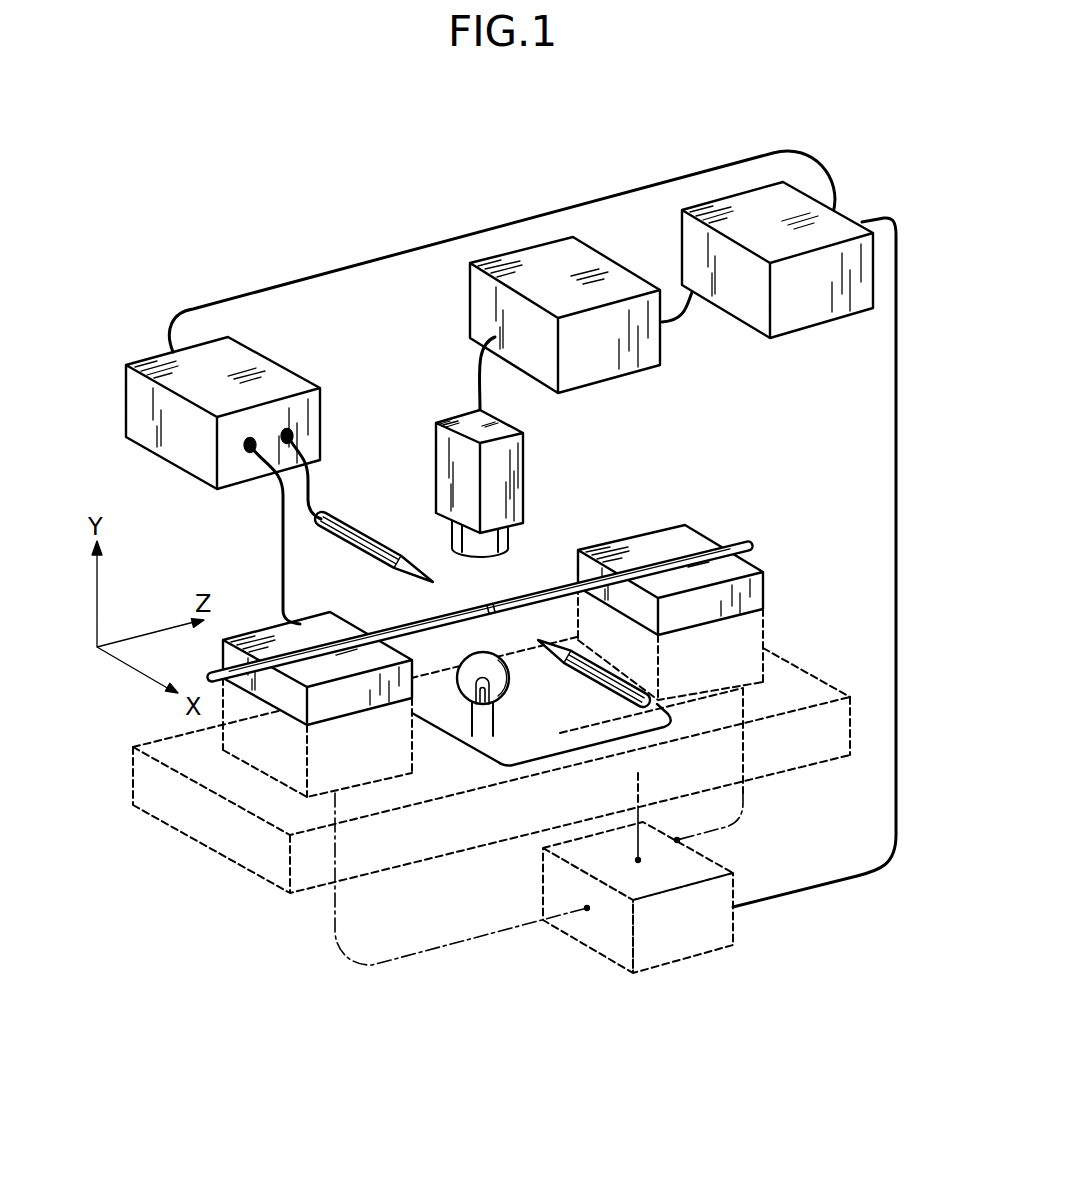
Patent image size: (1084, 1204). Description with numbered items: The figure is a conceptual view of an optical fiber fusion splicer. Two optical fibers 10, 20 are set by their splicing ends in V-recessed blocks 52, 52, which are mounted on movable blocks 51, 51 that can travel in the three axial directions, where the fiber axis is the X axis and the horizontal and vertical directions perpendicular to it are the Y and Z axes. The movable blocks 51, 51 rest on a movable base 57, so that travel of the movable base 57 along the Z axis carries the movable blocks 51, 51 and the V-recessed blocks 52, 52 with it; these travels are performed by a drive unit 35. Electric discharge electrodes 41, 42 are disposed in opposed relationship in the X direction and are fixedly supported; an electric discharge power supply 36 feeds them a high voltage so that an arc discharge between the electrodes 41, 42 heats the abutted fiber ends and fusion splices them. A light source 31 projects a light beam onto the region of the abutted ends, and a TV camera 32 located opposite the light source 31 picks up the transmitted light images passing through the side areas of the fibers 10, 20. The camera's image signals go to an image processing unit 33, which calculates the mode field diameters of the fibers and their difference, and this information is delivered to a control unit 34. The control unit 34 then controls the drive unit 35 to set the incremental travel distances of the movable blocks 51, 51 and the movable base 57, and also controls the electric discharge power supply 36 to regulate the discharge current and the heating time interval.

The optical fiber 10 is at (397, 632).
The optical fiber 20 is at (740, 538).
The light source 31 is at (512, 687).
The TV camera 32 is at (513, 485).
The image processing unit 33 is at (610, 278).
The control unit 34 is at (835, 220).
The drive unit 35 is at (668, 942).
The electric discharge power supply 36 is at (150, 365).
The electric discharge electrode 41 is at (382, 547).
The electric discharge electrode 42 is at (615, 682).
The movable block 51 is at (748, 641).
The V-recessed block 52 is at (260, 642).
The movable base 57 is at (367, 855).